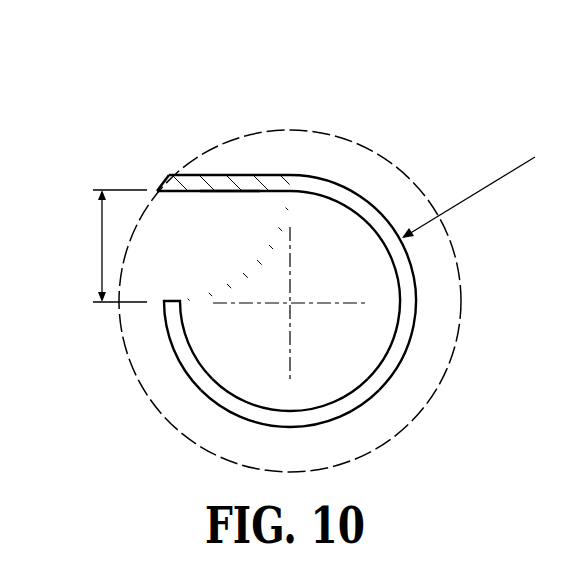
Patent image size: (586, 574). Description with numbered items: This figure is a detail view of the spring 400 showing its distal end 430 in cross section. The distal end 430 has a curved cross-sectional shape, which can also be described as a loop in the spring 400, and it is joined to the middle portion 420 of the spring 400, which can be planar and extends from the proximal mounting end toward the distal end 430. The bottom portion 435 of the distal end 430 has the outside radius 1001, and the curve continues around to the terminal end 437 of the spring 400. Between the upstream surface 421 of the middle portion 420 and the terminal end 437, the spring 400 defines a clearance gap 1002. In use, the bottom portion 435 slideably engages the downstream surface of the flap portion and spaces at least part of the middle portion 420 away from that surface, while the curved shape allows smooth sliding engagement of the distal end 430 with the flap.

The spring 400 is at (398, 127).
The middle portion 420 is at (196, 176).
The upstream surface 421 is at (250, 192).
The distal end 430 is at (408, 343).
The bottom portion 435 is at (303, 428).
The terminal end 437 is at (167, 300).
The outside radius 1001 is at (505, 178).
The clearance gap 1002 is at (102, 242).